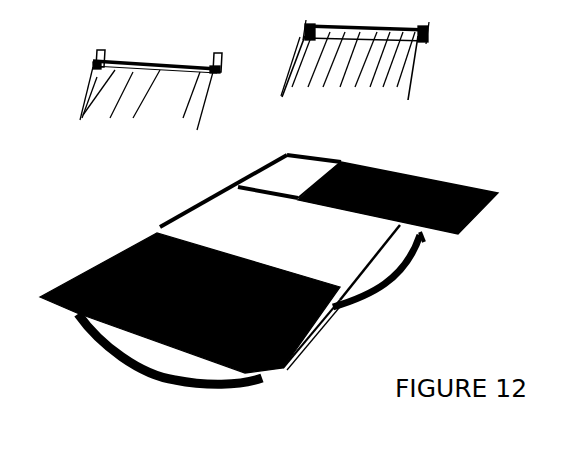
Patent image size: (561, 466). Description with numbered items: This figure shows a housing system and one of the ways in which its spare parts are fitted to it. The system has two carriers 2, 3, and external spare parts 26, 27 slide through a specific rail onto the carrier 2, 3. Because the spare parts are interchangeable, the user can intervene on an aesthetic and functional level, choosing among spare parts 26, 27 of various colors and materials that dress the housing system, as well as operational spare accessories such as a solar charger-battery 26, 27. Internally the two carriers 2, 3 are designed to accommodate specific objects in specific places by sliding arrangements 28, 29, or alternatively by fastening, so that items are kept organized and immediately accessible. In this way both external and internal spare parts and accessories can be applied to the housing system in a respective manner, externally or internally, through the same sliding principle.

The carrier 2 is at (147, 372).
The carrier 3 is at (195, 385).
The external spare part 26 is at (417, 173).
The external spare part 27 is at (248, 161).
The sliding element 28 is at (443, 37).
The sliding element 29 is at (81, 66).